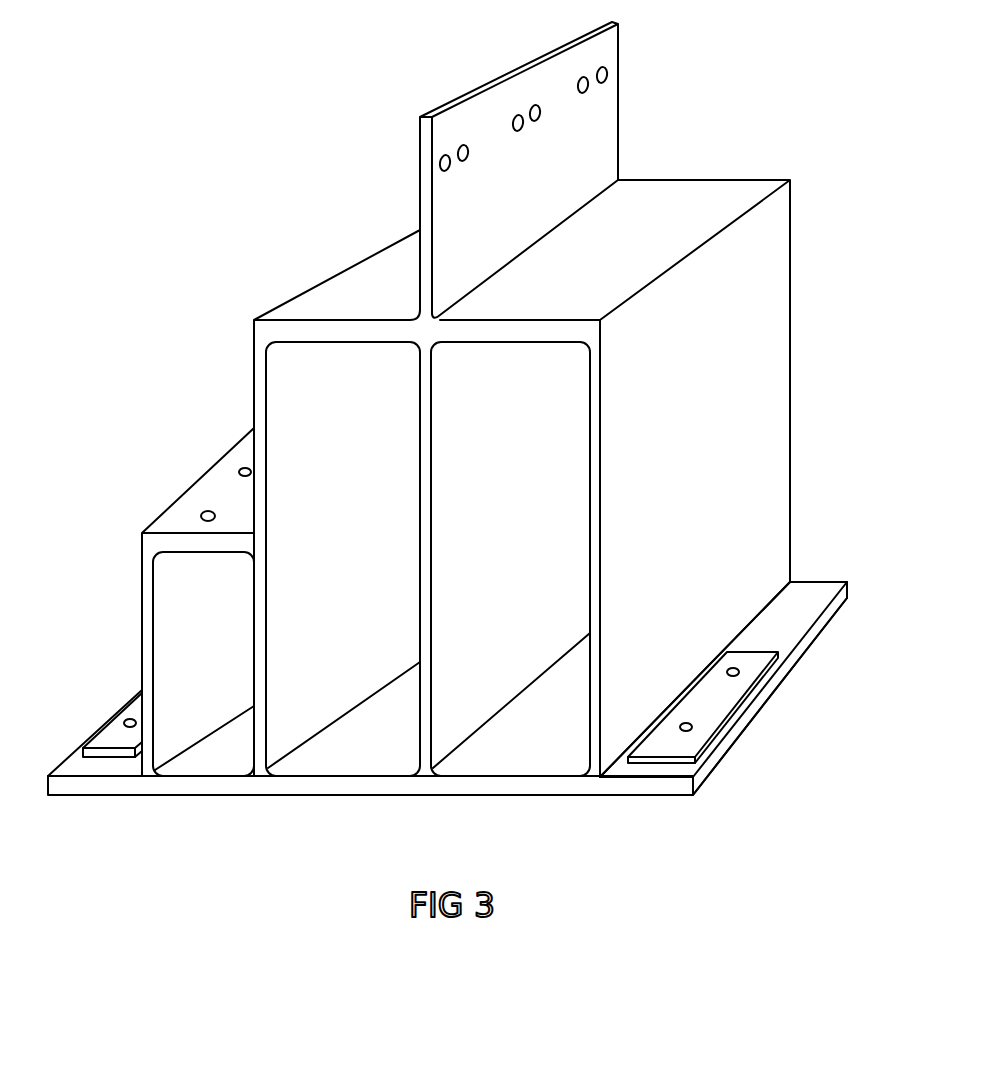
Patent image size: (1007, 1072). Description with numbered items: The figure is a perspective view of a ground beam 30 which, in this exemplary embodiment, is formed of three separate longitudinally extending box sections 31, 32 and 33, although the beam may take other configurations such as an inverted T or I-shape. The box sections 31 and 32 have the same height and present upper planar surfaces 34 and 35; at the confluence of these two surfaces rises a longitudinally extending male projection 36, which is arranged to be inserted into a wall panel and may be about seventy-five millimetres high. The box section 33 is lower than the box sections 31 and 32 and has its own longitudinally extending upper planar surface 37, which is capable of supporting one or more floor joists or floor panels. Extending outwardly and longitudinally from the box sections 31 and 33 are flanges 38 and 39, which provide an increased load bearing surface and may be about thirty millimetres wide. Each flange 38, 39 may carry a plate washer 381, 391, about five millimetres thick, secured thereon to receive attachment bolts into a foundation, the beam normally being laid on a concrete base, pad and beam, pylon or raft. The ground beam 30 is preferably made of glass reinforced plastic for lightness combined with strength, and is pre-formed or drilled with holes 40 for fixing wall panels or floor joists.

The ground beam 30 is at (297, 826).
The box section 31 is at (537, 753).
The box section 32 is at (372, 753).
The box section 33 is at (210, 765).
The upper planar surface 34 is at (723, 190).
The upper planar surface 35 is at (345, 292).
The male projection 36 is at (600, 124).
The upper planar surface 37 is at (168, 507).
The flange 38 is at (705, 770).
The plate washer 381 is at (705, 722).
The flange 39 is at (82, 786).
The plate washer 391 is at (112, 737).
The holes 40 is at (607, 74).